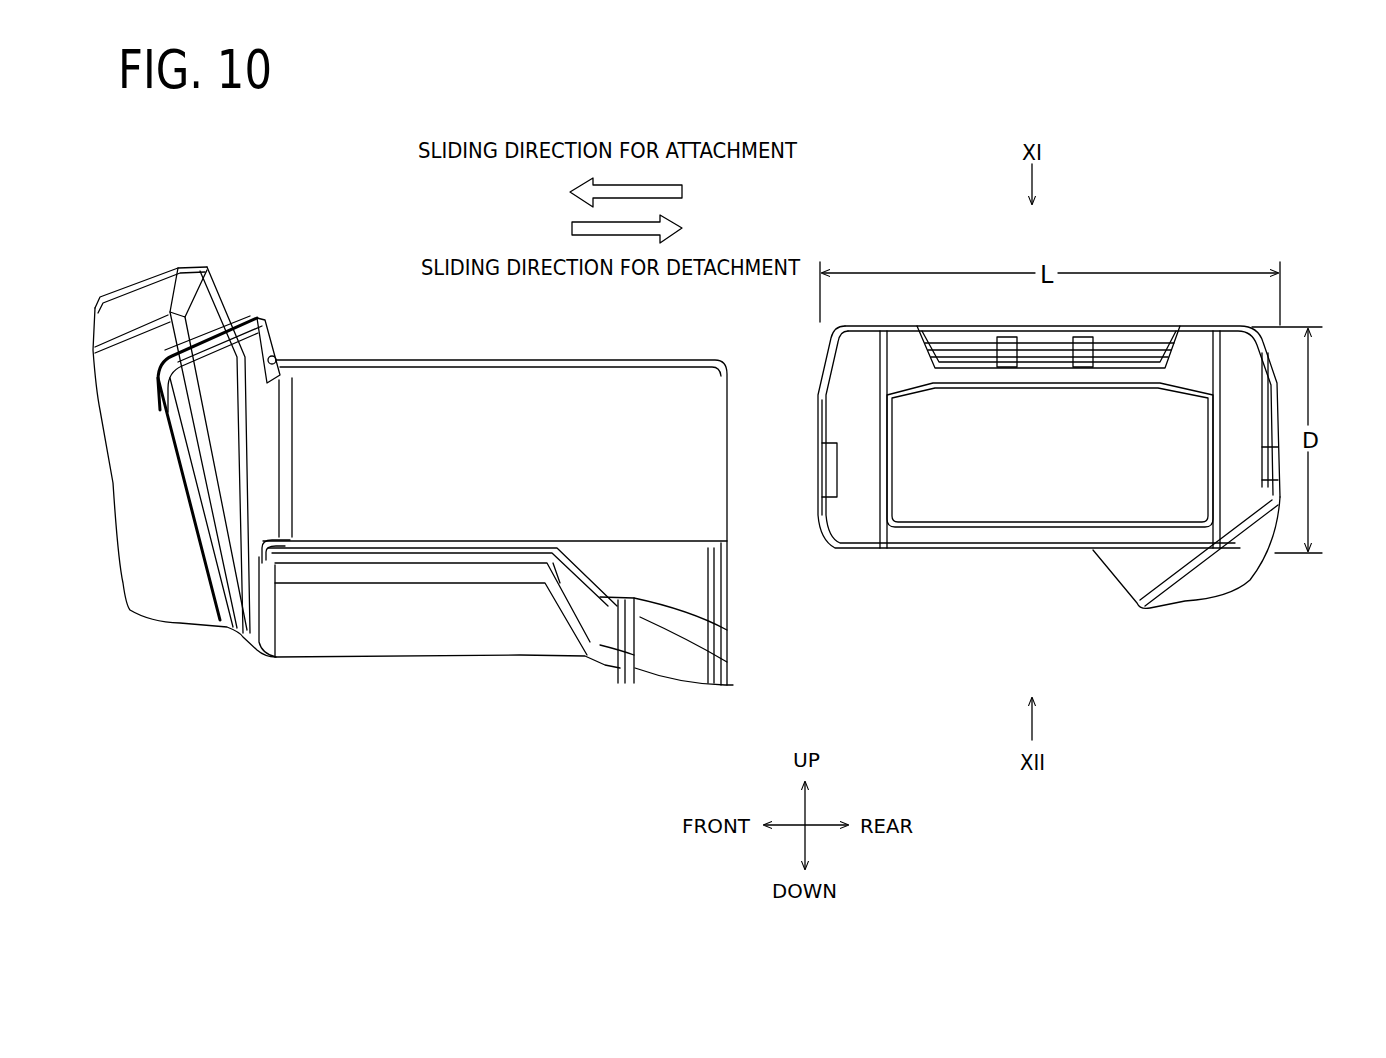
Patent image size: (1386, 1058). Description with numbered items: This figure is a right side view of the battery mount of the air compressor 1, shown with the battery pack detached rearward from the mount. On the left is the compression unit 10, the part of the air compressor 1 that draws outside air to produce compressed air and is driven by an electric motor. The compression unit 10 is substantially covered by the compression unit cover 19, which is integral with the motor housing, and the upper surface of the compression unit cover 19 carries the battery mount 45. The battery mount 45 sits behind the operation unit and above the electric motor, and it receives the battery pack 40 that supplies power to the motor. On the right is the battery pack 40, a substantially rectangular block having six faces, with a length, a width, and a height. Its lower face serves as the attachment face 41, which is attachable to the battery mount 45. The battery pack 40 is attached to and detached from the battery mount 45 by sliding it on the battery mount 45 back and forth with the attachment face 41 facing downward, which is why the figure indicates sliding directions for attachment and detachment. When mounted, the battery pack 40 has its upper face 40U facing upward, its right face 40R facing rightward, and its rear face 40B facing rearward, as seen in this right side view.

The air compressor 1 is at (272, 228).
The compression unit 10 is at (469, 464).
The compression unit cover 19 is at (733, 607).
The battery mount 45 is at (378, 547).
The battery pack 40 is at (1100, 445).
The upper face 40U is at (955, 320).
The rear face 40B is at (1280, 464).
The right face 40R is at (1060, 480).
The attachment face 41 is at (1049, 437).